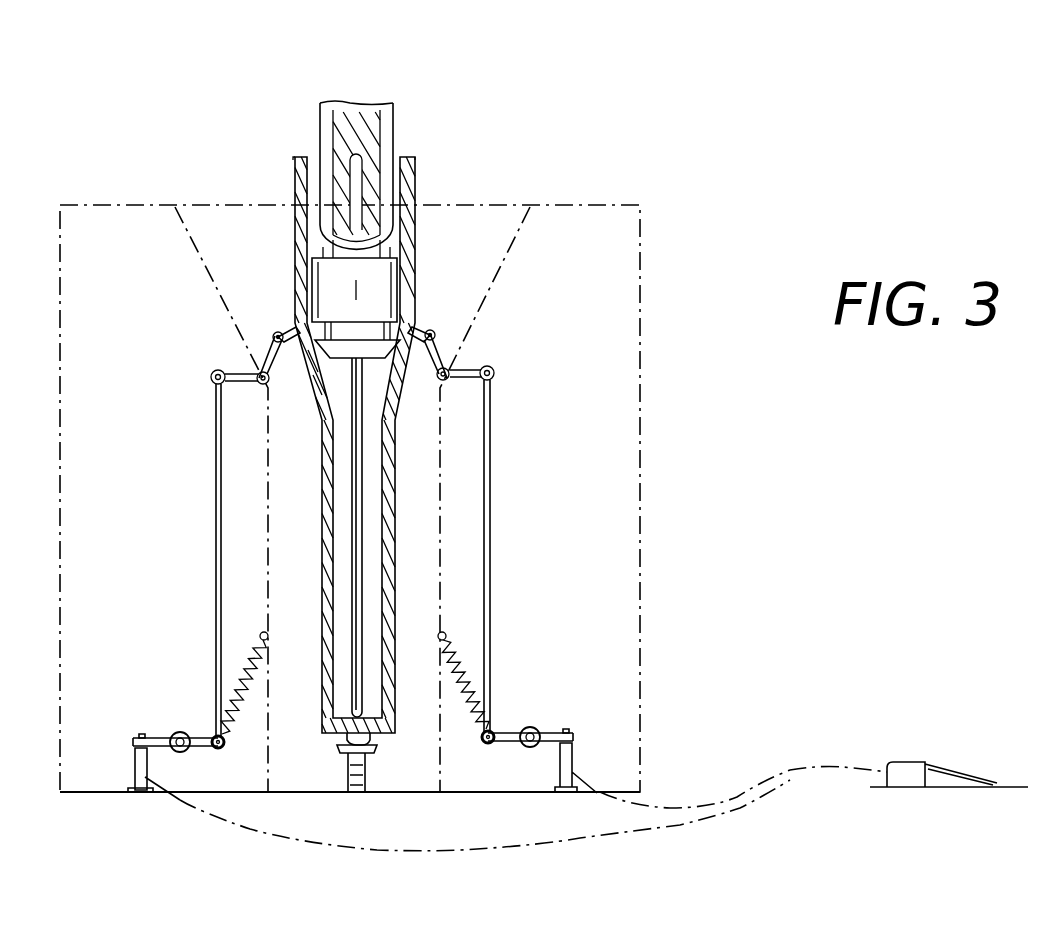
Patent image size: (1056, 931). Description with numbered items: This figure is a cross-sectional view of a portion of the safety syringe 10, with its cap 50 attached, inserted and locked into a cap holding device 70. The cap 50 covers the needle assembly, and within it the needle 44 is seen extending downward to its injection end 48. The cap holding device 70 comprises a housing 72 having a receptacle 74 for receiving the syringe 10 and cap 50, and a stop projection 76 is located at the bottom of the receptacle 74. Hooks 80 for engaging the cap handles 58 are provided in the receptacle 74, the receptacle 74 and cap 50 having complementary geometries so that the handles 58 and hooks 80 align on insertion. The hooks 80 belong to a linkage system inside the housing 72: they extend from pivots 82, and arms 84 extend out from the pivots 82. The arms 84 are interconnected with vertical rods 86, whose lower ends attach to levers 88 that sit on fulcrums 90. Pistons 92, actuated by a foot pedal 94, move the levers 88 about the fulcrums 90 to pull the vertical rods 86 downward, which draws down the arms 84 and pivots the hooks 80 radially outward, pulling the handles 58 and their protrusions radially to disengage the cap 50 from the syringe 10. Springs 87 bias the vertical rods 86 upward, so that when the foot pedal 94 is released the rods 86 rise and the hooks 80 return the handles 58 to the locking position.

The syringe 10 is at (430, 78).
The needle 44 is at (362, 552).
The injection end 48 is at (363, 677).
The cap 50 is at (418, 175).
The handles 58 is at (280, 330).
The cap holding device 70 is at (686, 189).
The housing 72 is at (641, 396).
The receptacle 74 is at (202, 253).
The stop projection 76 is at (362, 777).
The hooks 80 is at (287, 355).
The pivots 82 is at (258, 386).
The arms 84 is at (240, 372).
The vertical rods 86 is at (214, 552).
The springs 87 is at (228, 720).
The levers 88 is at (205, 733).
The fulcrums 90 is at (177, 732).
The pistons 92 is at (134, 748).
The foot pedal 94 is at (913, 762).